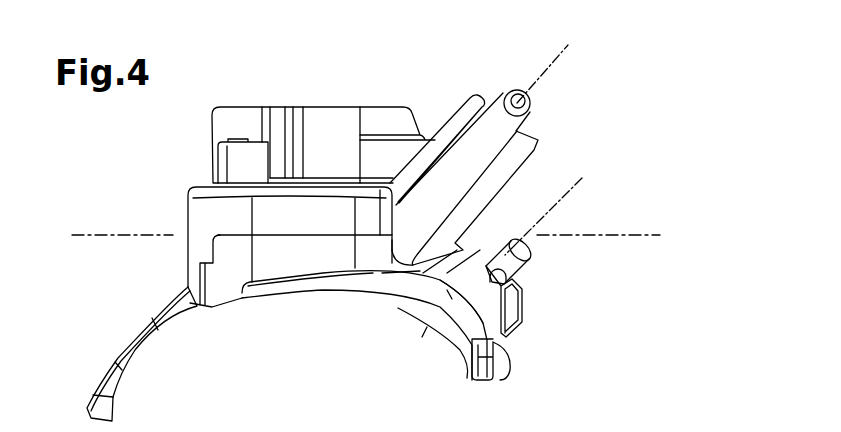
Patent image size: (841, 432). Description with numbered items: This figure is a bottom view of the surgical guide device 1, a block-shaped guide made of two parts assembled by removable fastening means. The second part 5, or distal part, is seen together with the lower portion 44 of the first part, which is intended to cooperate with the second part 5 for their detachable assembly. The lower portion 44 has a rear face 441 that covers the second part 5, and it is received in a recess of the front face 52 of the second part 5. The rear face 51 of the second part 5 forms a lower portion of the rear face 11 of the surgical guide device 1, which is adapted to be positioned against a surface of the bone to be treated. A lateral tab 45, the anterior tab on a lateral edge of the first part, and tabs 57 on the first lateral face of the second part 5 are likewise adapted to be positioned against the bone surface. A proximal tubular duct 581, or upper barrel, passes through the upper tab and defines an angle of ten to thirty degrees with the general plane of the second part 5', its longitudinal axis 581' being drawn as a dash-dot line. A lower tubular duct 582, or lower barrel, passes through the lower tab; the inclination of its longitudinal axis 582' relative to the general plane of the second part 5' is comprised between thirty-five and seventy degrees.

The surgical guide device 1 is at (441, 93).
The lower portion 44 is at (197, 213).
The rear face 441 is at (313, 250).
The front face 52 is at (289, 197).
The lateral tab 45 is at (132, 333).
The second part 5 is at (379, 315).
The general plane of the second part 5' is at (380, 268).
The rear face 51 is at (273, 310).
The rear face 11 is at (357, 335).
The tabs 57 is at (442, 290).
The proximal tubular duct 581 is at (536, 286).
The longitudinal axis of the proximal tubular duct 581' is at (585, 211).
The lower tubular duct 582 is at (509, 177).
The longitudinal axis of the lower tubular duct 582' is at (581, 74).